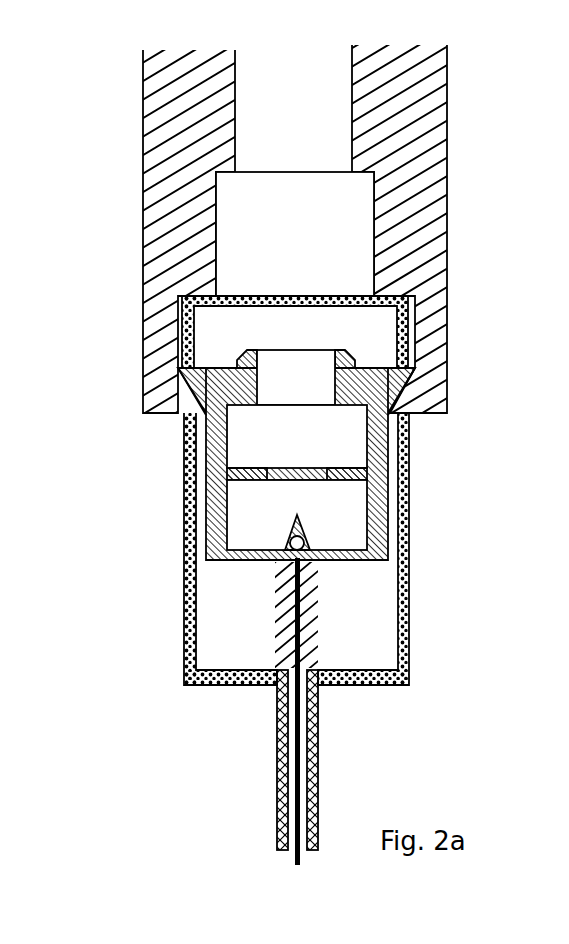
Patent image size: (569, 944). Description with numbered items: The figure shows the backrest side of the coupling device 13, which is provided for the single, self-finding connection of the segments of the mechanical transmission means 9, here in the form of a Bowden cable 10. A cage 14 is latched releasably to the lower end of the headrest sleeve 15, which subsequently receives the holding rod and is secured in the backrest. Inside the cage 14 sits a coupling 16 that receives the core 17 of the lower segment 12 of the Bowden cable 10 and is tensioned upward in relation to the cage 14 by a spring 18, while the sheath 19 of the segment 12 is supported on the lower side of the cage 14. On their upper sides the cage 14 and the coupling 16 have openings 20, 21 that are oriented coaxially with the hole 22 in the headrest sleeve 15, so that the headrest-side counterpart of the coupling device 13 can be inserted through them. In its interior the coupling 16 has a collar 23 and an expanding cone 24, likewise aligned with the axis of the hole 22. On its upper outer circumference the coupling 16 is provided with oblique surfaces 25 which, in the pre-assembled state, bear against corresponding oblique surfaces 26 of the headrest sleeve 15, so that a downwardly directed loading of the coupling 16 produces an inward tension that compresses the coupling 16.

The mechanical transmission means 9 is at (266, 762).
The Bowden cable 10 is at (298, 760).
The lower segment 12 is at (266, 818).
The coupling device 13 is at (285, 580).
The cage 14 is at (187, 627).
The headrest sleeve 15 is at (407, 139).
The coupling 16 is at (304, 448).
The core 17 is at (300, 717).
The spring 18 is at (313, 598).
The sheath 19 is at (313, 767).
The opening 20 is at (296, 297).
The opening 21 is at (300, 382).
The hole 22 is at (284, 112).
The collar 23 is at (347, 468).
The expanding cone 24 is at (300, 523).
The oblique surfaces 25 is at (206, 392).
The oblique surfaces 26 is at (414, 387).